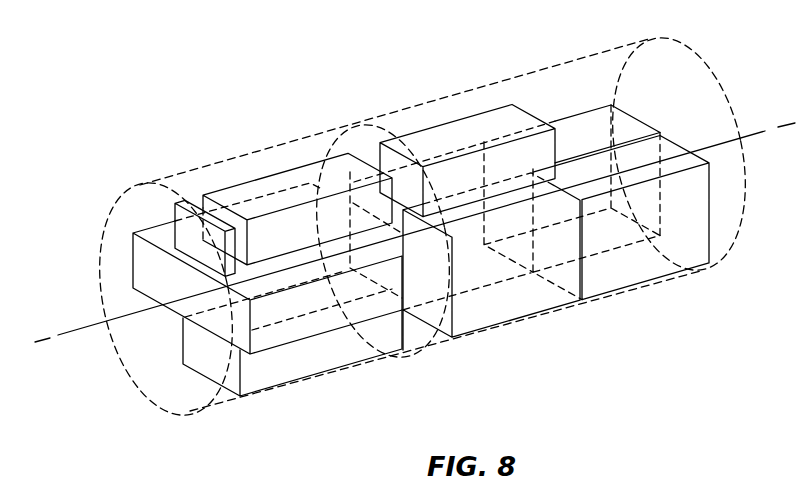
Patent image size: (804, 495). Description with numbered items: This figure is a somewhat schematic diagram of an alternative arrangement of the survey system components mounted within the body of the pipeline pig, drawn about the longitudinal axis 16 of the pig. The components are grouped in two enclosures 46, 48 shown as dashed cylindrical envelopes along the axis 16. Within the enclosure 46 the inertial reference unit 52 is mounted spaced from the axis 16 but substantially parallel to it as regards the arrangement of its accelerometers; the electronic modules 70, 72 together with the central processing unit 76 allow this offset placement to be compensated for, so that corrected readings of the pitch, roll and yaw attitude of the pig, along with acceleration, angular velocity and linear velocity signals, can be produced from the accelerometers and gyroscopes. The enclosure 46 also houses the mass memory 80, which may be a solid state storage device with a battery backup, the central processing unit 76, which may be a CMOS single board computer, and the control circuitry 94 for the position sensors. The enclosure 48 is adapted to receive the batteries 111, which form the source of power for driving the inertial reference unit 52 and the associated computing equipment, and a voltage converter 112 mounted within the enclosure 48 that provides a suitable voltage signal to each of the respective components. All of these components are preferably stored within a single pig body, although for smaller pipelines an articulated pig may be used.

The axis 16 is at (90, 327).
The enclosure 46 is at (227, 157).
The enclosure 48 is at (507, 80).
The inertial reference unit 52 is at (292, 316).
The electronic module 70 is at (292, 316).
The electronic module 72 is at (202, 376).
The central processing unit 76 is at (303, 164).
The mass memory 80 is at (133, 268).
The control circuitry 94 is at (173, 212).
The batteries 111 is at (568, 118).
The voltage converter 112 is at (430, 127).